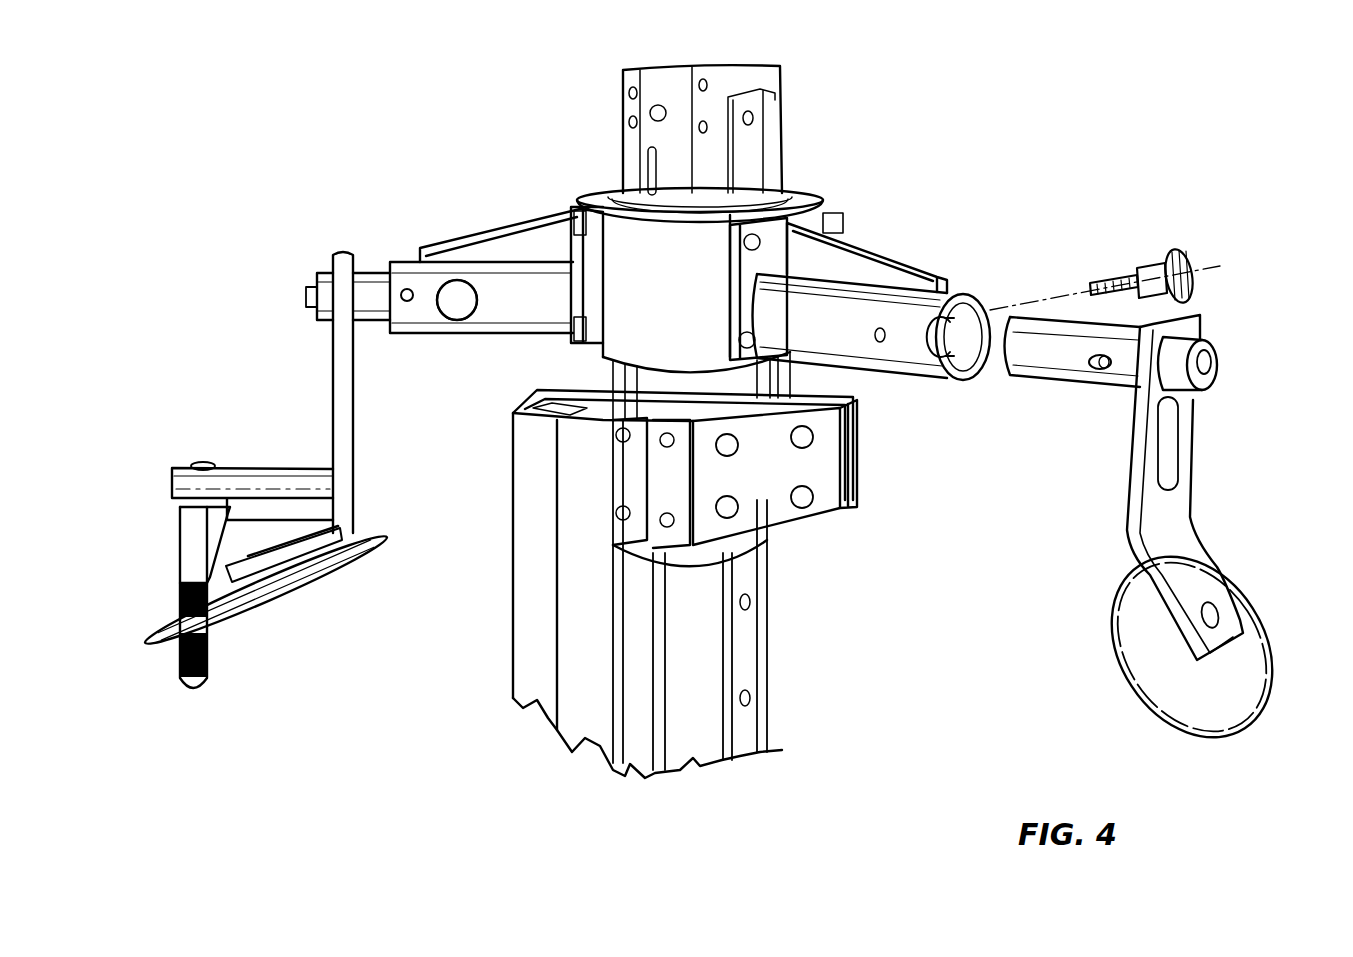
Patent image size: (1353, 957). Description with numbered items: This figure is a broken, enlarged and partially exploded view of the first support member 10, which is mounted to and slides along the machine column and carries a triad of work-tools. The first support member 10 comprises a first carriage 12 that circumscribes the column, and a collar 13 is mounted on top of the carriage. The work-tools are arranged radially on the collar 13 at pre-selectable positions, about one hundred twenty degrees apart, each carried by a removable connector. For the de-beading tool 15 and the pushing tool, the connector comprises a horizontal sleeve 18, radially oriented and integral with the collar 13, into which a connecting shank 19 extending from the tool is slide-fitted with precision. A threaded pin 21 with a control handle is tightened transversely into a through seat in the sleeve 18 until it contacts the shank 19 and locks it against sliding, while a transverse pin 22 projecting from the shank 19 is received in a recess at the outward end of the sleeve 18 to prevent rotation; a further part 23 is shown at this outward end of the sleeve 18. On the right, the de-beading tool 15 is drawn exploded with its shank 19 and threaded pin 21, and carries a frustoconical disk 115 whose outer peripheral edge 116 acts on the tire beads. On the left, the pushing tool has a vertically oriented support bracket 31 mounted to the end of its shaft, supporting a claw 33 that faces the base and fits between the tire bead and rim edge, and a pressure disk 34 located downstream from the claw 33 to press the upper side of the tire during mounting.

The first support member 10 is at (878, 487).
The first carriage 12 is at (770, 493).
The collar 13 is at (702, 285).
The de-beading tool 15 is at (1222, 522).
The horizontal sleeve 18 is at (833, 312).
The connecting shank 19 is at (1062, 352).
The threaded pin 21 is at (460, 300).
The transverse pin 22 is at (408, 290).
The clip 23 is at (933, 383).
The support bracket 31 is at (343, 370).
The claw 33 is at (198, 544).
The pressure disk 34 is at (298, 593).
The disk 115 is at (1213, 678).
The outer peripheral edge 116 is at (1130, 667).